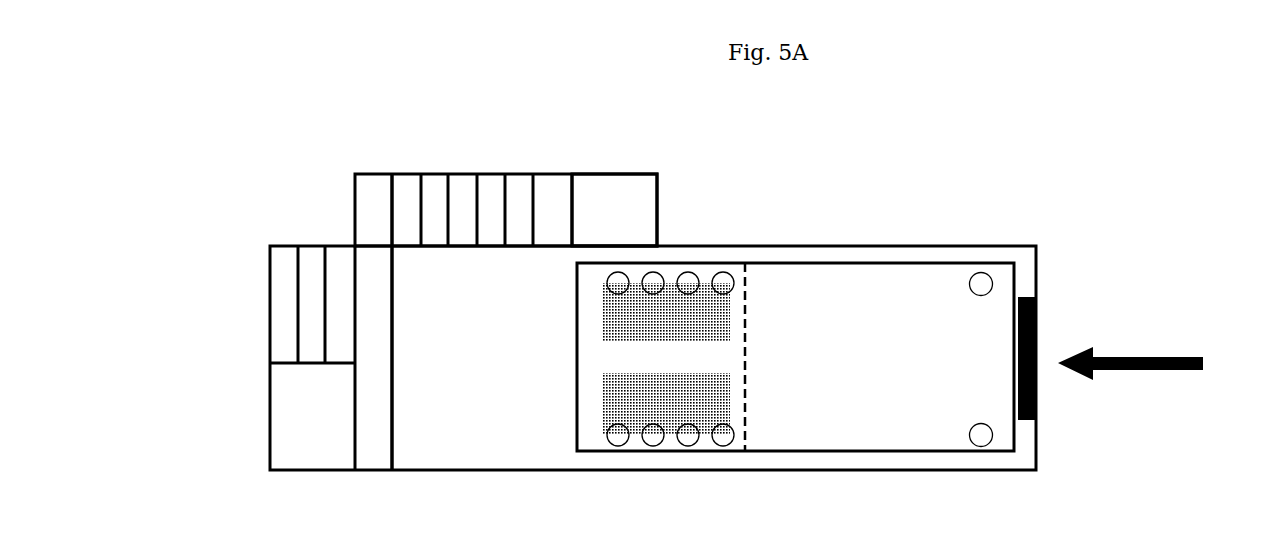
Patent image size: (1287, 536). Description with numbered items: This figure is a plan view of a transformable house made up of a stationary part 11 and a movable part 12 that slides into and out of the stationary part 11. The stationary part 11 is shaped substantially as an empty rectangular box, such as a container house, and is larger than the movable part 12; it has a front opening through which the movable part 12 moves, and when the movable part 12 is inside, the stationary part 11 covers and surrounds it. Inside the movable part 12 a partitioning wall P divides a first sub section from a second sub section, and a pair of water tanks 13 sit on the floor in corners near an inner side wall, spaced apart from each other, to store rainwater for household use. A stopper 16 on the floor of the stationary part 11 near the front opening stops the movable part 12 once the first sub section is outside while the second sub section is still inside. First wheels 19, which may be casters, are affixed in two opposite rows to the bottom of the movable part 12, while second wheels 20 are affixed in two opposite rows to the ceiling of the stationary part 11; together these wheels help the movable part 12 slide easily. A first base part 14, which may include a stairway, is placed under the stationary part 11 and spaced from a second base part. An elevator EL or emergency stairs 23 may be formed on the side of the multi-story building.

The stationary part 11 is at (690, 246).
The movable part 12 is at (1016, 283).
The water tank 13 is at (605, 318).
The first base part 14 is at (285, 348).
The stopper 16 is at (1036, 392).
The first wheels 19 is at (981, 435).
The second wheels 20 is at (688, 435).
The emergency stairs 23 is at (433, 203).
The elevator EL is at (627, 207).
The partitioning wall P is at (745, 325).